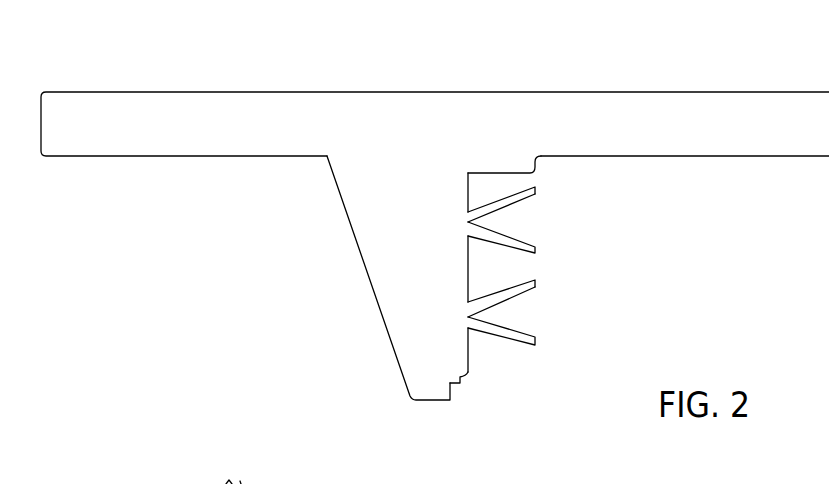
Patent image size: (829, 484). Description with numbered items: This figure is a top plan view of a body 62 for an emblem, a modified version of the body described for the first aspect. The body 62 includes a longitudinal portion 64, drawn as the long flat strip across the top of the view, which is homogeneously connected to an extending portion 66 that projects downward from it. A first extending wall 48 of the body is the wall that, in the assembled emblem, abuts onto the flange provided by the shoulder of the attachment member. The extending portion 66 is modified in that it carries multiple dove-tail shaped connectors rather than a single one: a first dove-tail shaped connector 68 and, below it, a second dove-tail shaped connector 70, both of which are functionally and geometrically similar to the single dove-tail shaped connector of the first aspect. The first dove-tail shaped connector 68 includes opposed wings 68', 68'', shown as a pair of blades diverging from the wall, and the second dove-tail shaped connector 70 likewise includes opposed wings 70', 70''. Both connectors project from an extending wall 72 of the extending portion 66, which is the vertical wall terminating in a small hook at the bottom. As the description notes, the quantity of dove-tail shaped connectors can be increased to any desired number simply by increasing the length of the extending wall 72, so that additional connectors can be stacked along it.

The first extending wall 48 is at (532, 168).
The body 62 is at (549, 64).
The longitudinal portion 64 is at (740, 100).
The extending portion 66 is at (405, 313).
The first dove-tail shaped connector 68 is at (559, 186).
The wing 68' is at (517, 219).
The wing 68'' is at (549, 251).
The second dove-tail shaped connector 70 is at (564, 295).
The wing 70' is at (518, 312).
The wing 70'' is at (549, 347).
The extending wall 72 is at (470, 373).